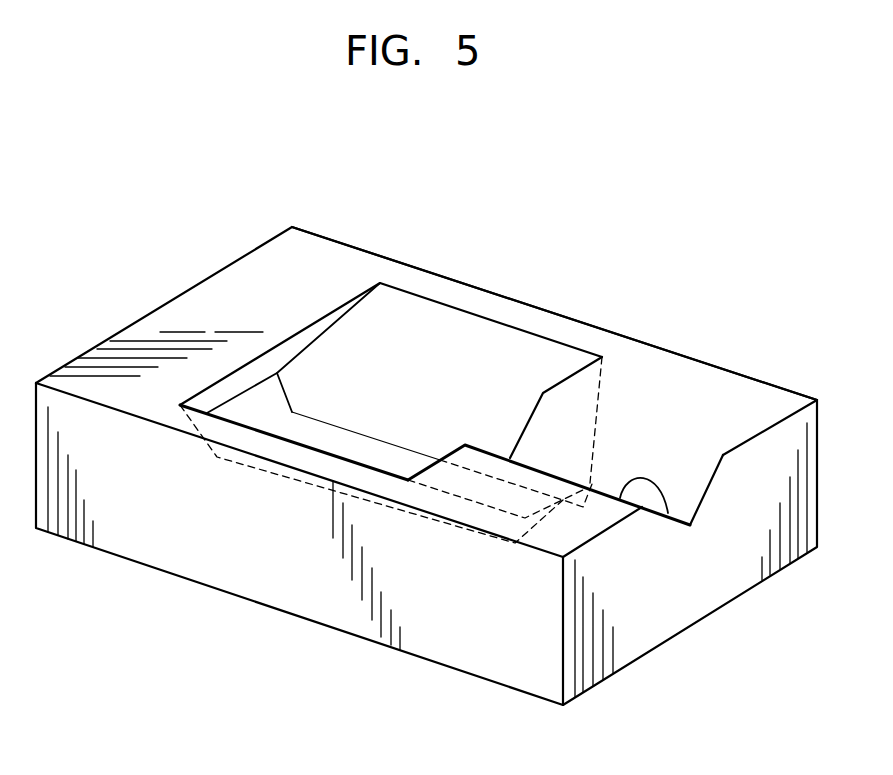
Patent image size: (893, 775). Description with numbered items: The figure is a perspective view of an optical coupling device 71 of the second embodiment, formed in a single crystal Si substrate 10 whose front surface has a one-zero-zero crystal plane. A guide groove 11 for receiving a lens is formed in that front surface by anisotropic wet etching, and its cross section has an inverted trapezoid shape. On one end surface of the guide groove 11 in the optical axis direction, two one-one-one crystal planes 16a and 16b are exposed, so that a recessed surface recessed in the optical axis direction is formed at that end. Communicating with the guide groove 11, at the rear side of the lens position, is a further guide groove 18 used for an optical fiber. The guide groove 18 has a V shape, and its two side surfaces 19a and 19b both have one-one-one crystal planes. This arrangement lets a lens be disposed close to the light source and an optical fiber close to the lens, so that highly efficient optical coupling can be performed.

The single crystal Si substrate 10 is at (275, 576).
The guide groove 11 is at (425, 365).
The {111} plane 16a is at (235, 383).
The {111} plane 16b is at (260, 407).
The optical coupling device 71 is at (537, 307).
The guide groove 18 is at (625, 448).
The side surface 19a is at (682, 462).
The side surface 19b is at (667, 515).